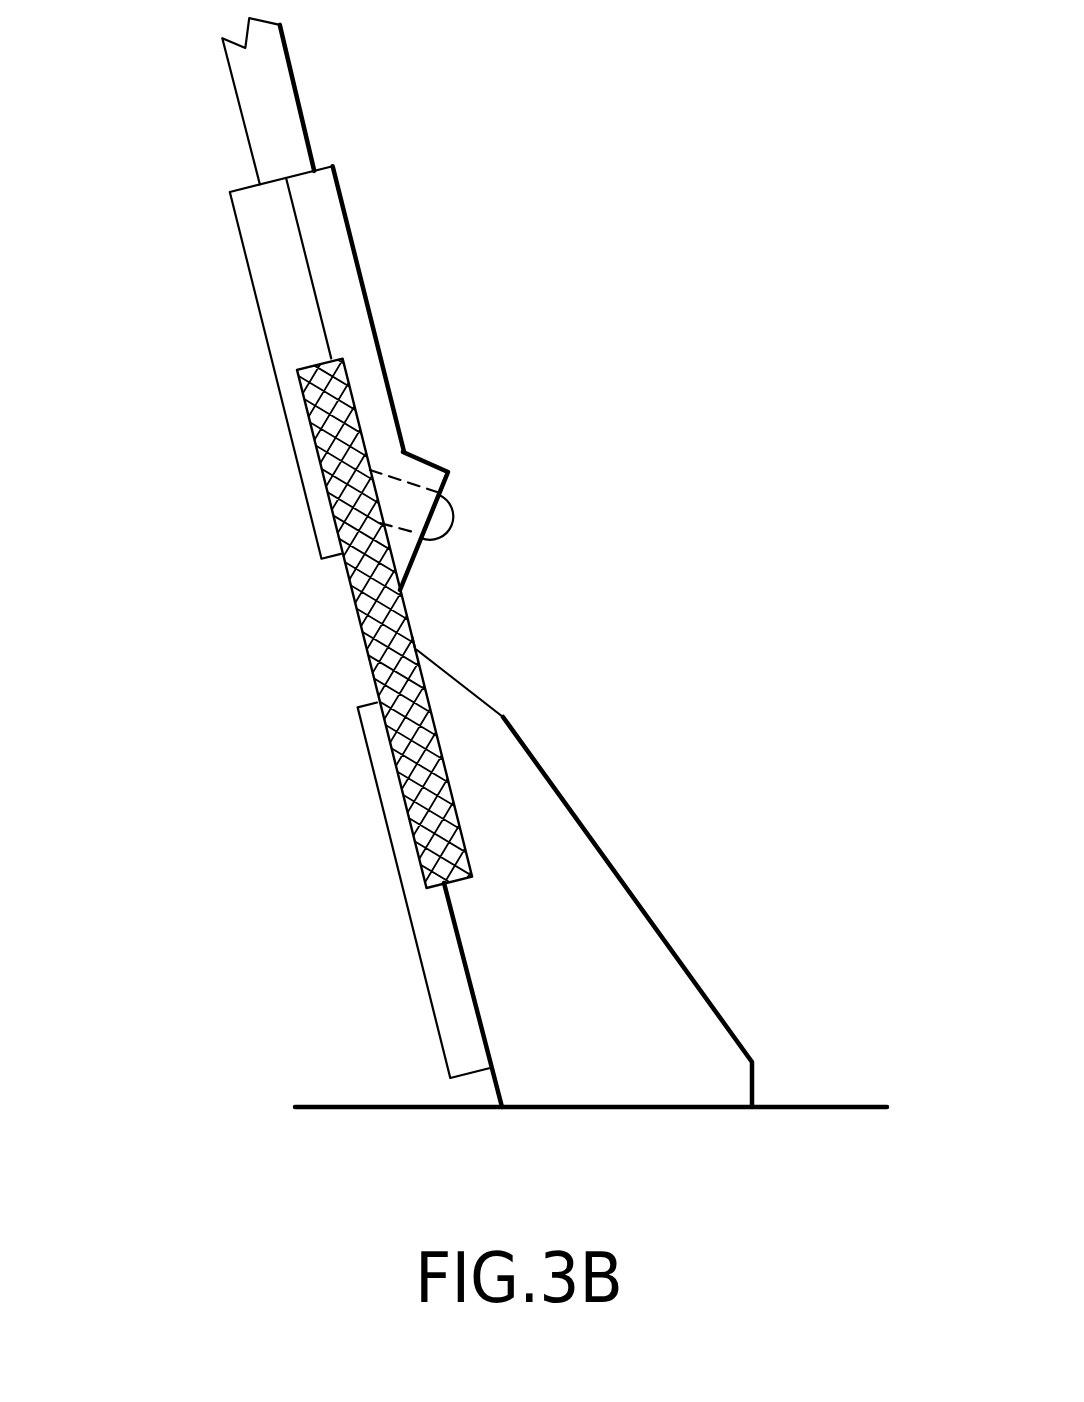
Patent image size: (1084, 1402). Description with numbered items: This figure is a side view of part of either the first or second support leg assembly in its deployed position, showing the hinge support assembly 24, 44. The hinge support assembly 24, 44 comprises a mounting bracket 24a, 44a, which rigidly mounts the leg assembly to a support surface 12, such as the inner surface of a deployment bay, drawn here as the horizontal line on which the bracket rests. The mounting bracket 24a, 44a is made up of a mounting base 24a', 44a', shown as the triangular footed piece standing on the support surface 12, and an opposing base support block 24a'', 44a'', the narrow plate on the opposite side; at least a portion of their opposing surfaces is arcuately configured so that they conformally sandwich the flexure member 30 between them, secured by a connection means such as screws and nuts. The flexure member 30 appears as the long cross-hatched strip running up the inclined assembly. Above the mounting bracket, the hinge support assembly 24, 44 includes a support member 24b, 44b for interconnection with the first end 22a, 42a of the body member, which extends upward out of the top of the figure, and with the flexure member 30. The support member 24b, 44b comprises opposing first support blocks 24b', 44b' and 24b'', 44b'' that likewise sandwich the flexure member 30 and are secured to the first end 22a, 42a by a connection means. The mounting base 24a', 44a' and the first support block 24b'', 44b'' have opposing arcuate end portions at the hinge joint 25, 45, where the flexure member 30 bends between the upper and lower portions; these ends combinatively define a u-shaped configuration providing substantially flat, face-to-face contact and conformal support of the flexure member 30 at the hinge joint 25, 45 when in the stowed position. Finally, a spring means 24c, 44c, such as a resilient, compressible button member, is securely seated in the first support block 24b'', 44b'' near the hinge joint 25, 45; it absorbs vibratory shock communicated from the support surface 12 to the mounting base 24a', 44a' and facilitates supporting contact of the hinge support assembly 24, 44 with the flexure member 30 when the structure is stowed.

The support surface 12 is at (824, 1082).
The first end of body member 22a is at (345, 97).
The first end of body member 42a is at (292, 138).
The hinge support assembly 24 is at (513, 636).
The hinge support assembly 44 is at (513, 636).
The mounting bracket 24a is at (516, 878).
The mounting bracket 44a is at (516, 878).
The mounting base 24a' is at (592, 878).
The mounting base 44a' is at (592, 878).
The base support block 24a'' is at (307, 888).
The base support block 44a'' is at (307, 888).
The support member 24b is at (406, 378).
The support member 44b is at (406, 378).
The first support block 24b' is at (272, 362).
The first support block 44b' is at (272, 362).
The first support block 24b'' is at (446, 308).
The first support block 44b'' is at (446, 308).
The spring means 24c is at (523, 521).
The spring means 44c is at (452, 512).
The hinge joint 25 is at (504, 623).
The hinge joint 45 is at (500, 602).
The flexure member 30 is at (413, 638).